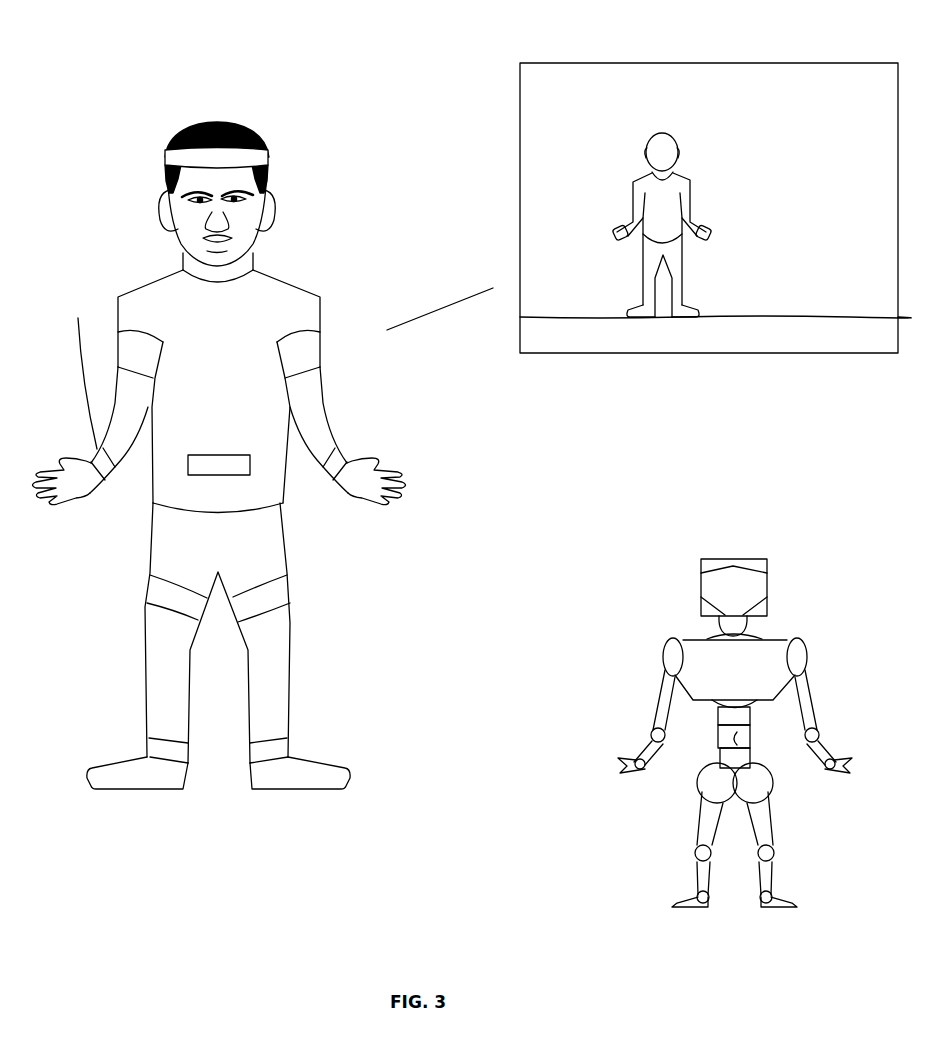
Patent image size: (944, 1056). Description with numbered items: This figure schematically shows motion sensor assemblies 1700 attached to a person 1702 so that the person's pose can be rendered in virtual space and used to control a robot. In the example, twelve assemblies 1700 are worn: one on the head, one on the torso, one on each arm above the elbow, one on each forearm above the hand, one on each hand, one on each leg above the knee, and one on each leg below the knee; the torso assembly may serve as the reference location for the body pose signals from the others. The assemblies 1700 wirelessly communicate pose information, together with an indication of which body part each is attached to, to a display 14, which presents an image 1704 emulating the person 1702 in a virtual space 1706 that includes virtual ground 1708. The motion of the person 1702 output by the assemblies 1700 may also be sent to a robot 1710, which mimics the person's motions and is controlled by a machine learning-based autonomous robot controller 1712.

The display 14 is at (518, 80).
The assembly 1700 is at (166, 155).
The person 1702 is at (263, 243).
The image 1704 is at (647, 147).
The virtual space 1706 is at (815, 78).
The virtual ground 1708 is at (800, 316).
The robot 1710 is at (767, 587).
The autonomous robot controller 1712 is at (727, 740).